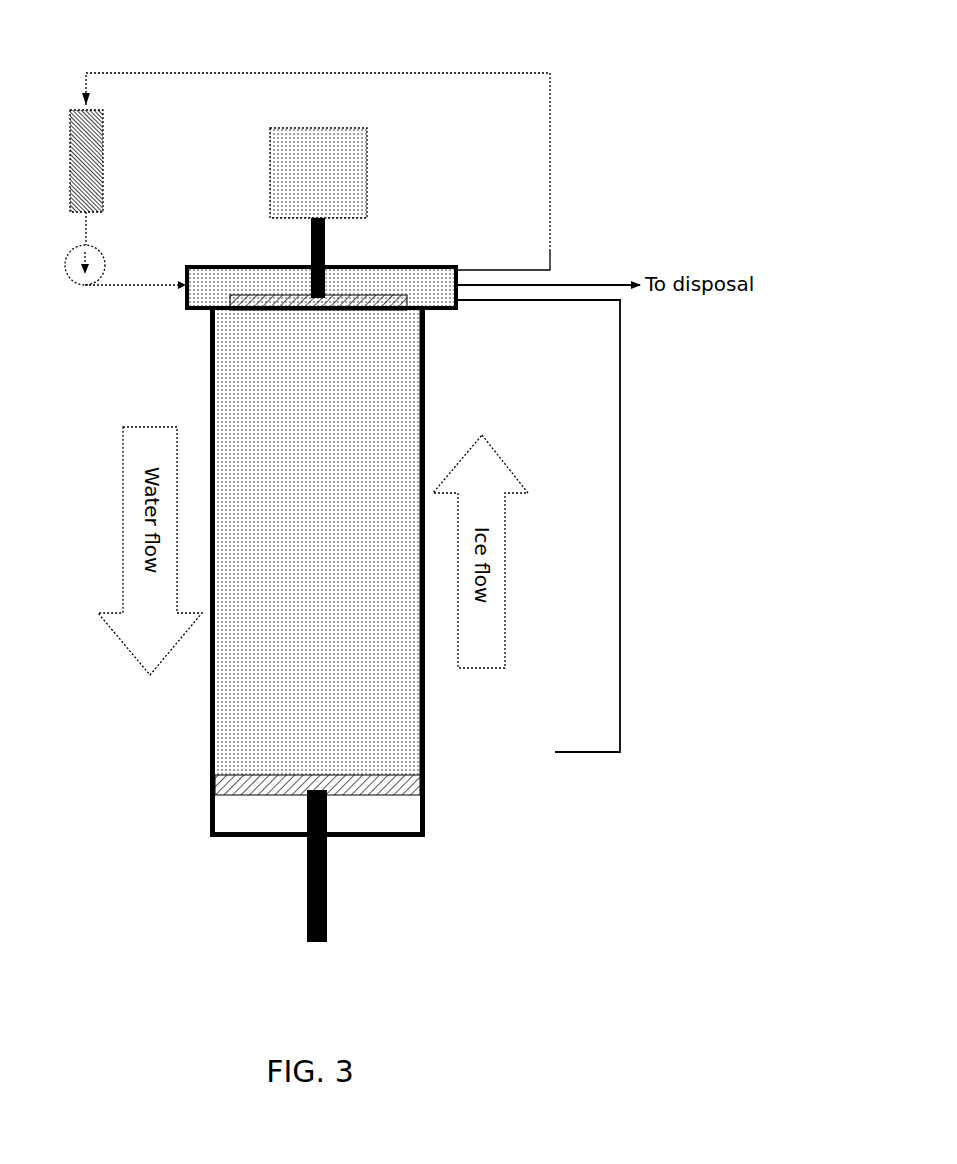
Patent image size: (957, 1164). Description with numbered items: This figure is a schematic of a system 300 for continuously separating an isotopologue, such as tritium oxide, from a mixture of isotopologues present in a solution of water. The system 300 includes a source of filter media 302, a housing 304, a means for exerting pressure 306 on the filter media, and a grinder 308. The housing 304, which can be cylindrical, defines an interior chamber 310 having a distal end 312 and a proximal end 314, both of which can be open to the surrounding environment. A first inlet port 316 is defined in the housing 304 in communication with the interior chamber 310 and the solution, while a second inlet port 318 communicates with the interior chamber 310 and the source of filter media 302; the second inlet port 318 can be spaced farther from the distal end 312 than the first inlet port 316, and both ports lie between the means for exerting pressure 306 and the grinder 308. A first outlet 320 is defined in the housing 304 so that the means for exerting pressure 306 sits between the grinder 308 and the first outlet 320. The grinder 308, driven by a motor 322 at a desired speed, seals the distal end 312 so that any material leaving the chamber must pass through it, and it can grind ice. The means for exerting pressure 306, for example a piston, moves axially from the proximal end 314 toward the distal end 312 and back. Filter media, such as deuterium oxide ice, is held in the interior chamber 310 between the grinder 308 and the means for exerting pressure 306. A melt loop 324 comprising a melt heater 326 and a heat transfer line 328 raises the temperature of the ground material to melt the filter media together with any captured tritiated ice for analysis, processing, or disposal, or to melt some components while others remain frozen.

The system 300 is at (667, 515).
The source of filter media 302 is at (400, 697).
The housing 304 is at (210, 705).
The means for exerting pressure 306 is at (395, 793).
The grinder 308 is at (232, 309).
The interior chamber 310 is at (410, 440).
The distal end 312 is at (210, 350).
The proximal end 314 is at (233, 758).
The first inlet port 316 is at (428, 358).
The second inlet port 318 is at (428, 752).
The first outlet 320 is at (210, 818).
The motor 322 is at (357, 177).
The melt loop 324 is at (577, 145).
The melt heater 326 is at (92, 158).
The heat transfer line 328 is at (127, 283).